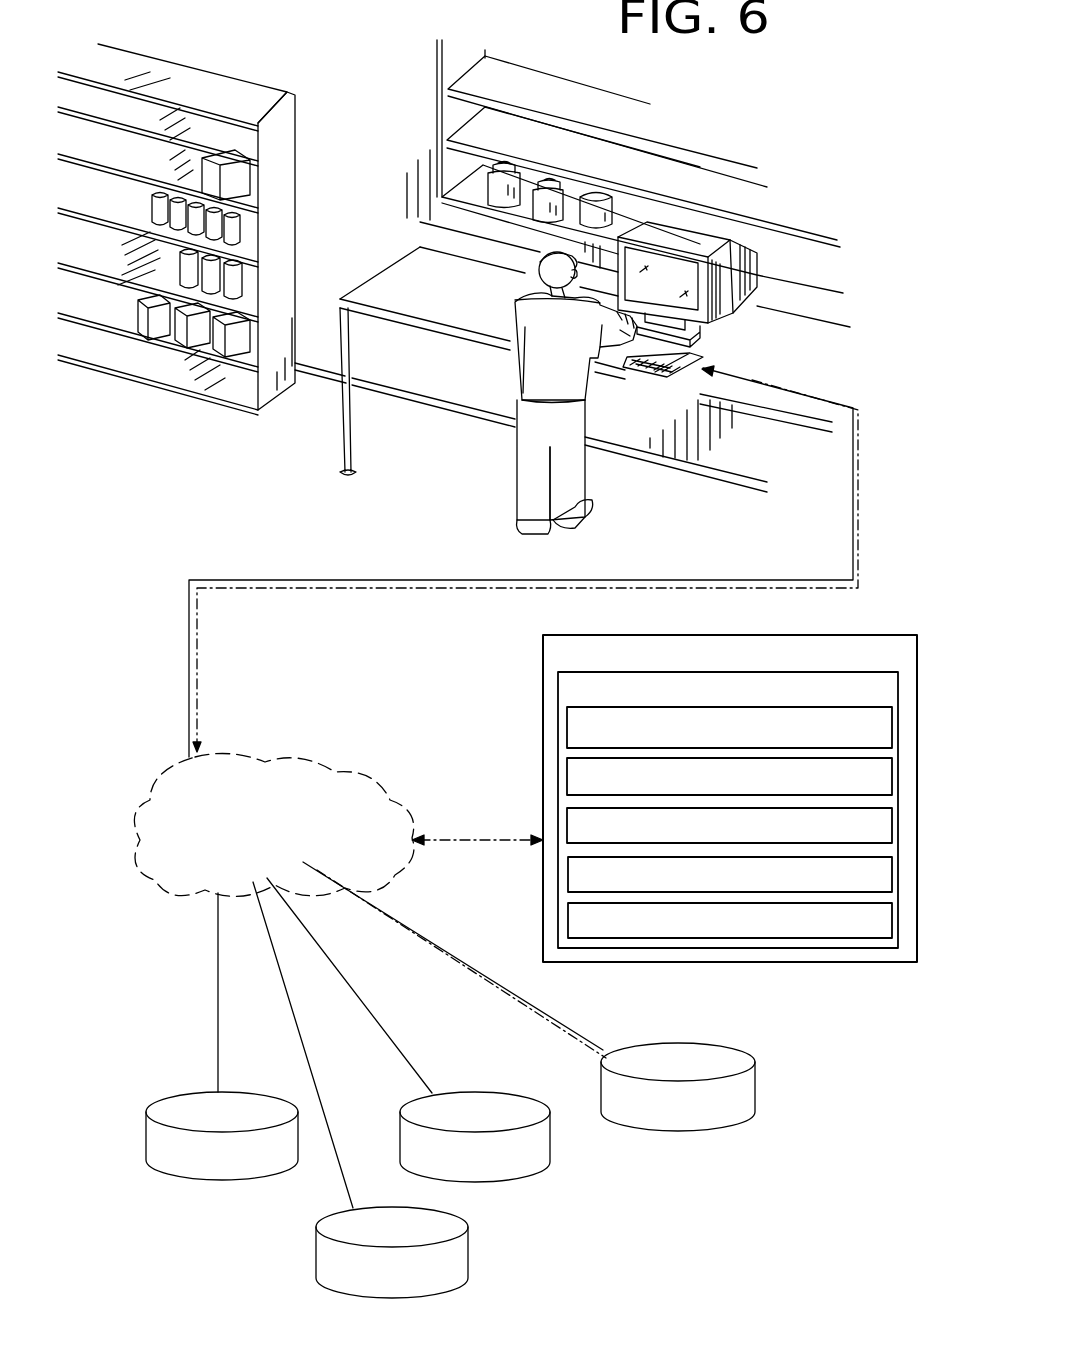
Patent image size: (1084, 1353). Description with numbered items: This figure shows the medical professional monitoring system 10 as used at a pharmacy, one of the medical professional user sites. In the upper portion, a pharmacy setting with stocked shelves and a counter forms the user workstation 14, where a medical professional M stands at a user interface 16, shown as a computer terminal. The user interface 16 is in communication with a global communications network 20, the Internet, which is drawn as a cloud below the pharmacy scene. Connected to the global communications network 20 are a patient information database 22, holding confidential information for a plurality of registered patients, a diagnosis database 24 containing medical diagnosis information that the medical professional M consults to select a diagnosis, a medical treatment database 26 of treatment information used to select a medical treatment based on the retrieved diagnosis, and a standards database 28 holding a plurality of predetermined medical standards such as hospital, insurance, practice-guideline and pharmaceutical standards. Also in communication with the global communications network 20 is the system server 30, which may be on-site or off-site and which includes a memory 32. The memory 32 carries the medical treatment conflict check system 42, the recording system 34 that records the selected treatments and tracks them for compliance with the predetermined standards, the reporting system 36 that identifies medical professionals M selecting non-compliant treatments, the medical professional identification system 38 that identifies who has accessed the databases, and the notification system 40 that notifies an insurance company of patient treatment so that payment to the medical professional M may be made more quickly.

The medical professional monitoring system 10 is at (413, 710).
The user workstation 14 is at (867, 145).
The user interface 16 is at (737, 315).
The medical professional M is at (527, 450).
The global communications network 20 is at (162, 874).
The patient information database 22 is at (147, 1138).
The diagnosis database 24 is at (527, 1177).
The medical treatment database 26 is at (757, 1100).
The standards database 28 is at (315, 1258).
The server 30 is at (917, 653).
The memory 32 is at (898, 685).
The recording system 34 is at (892, 782).
The reporting system 36 is at (892, 826).
The medical professional identification system 38 is at (892, 874).
The notification system 40 is at (892, 920).
The medical treatment conflict check system 42 is at (892, 728).